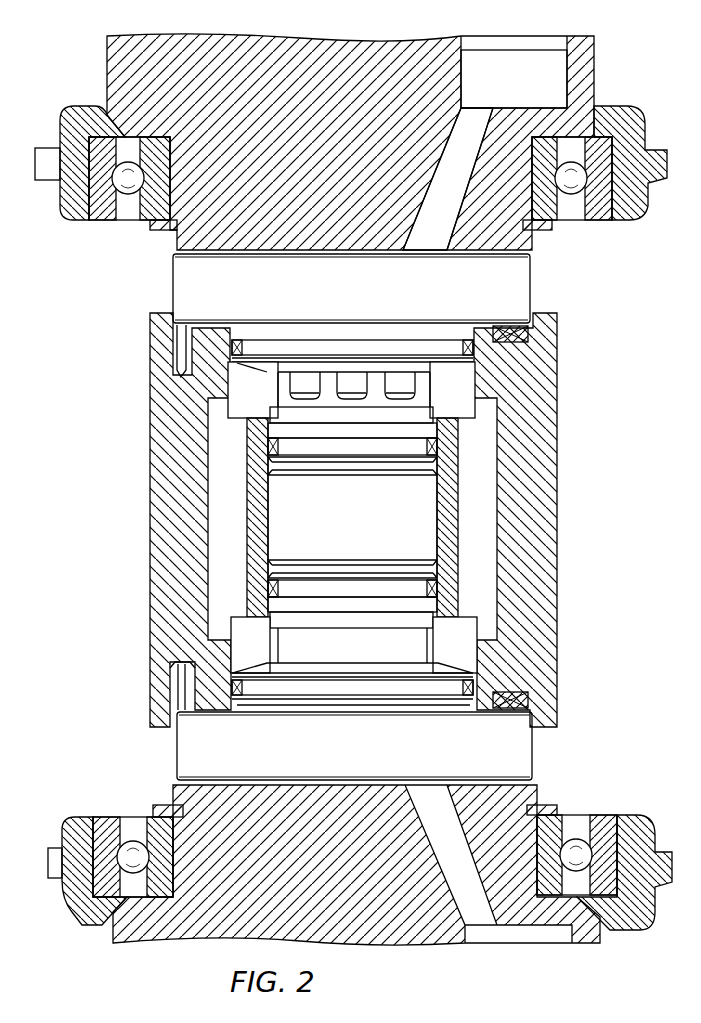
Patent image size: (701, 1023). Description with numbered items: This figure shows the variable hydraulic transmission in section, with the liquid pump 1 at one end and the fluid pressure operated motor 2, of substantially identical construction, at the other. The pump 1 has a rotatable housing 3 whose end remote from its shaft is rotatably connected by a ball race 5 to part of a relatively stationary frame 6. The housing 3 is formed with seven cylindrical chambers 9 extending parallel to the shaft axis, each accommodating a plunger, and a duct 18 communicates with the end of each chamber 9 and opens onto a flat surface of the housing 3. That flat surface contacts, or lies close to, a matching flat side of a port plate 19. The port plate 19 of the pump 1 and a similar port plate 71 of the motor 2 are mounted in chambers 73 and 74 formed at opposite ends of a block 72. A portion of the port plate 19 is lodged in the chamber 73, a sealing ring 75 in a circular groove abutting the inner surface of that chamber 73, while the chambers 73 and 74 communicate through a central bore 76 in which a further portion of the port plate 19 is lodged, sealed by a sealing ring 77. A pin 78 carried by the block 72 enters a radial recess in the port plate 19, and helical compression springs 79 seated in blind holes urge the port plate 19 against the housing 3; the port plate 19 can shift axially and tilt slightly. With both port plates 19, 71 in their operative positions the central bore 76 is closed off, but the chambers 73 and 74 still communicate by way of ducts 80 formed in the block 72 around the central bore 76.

The liquid pump 1 is at (351, 147).
The fluid pressure operated motor 2 is at (143, 944).
The rotatable housing 3 is at (344, 46).
The ball race 5 is at (108, 215).
The frame 6 is at (46, 152).
The cylindrical bore or chamber 9 is at (527, 60).
The duct 18 is at (433, 238).
The port plate 19 is at (532, 293).
The port plate 71 is at (186, 746).
The block 72 is at (358, 506).
The chamber 73 is at (246, 408).
The chamber 74 is at (240, 624).
The sealing ring 75 is at (468, 365).
The central bore 76 is at (428, 505).
The sealing ring 77 is at (447, 443).
The pin 78 is at (174, 343).
The helical compression spring 79 is at (502, 324).
The duct 80 is at (240, 508).